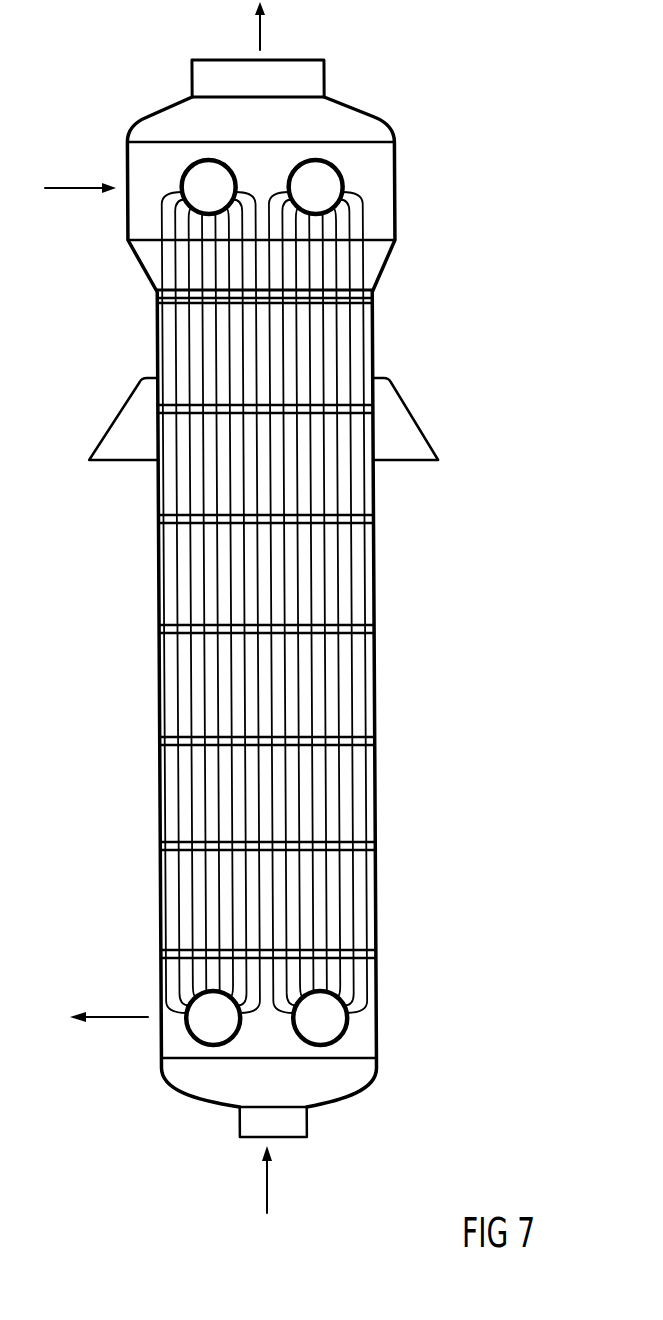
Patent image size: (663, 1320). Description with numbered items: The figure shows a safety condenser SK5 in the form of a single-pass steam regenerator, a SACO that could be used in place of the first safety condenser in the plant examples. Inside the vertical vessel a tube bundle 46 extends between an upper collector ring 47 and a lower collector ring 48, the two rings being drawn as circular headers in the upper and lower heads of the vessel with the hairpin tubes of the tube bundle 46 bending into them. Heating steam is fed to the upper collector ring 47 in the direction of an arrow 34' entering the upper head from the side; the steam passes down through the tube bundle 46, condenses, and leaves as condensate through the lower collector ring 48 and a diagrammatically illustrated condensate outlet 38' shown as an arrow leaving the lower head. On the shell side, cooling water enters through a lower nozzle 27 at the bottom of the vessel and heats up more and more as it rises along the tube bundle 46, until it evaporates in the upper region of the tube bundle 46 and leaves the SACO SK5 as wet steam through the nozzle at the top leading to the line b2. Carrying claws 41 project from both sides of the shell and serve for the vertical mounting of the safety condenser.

The line b2 is at (313, 77).
The upper collector ring 47 is at (339, 172).
The lower collector ring 48 is at (352, 1027).
The tube bundle 46 is at (330, 784).
The carrying claws 41 is at (120, 420).
The arrow 34' is at (80, 165).
The condensate outlet 38' is at (109, 993).
The lower nozzle 27 is at (297, 1122).
The safety condenser SK5 is at (460, 668).